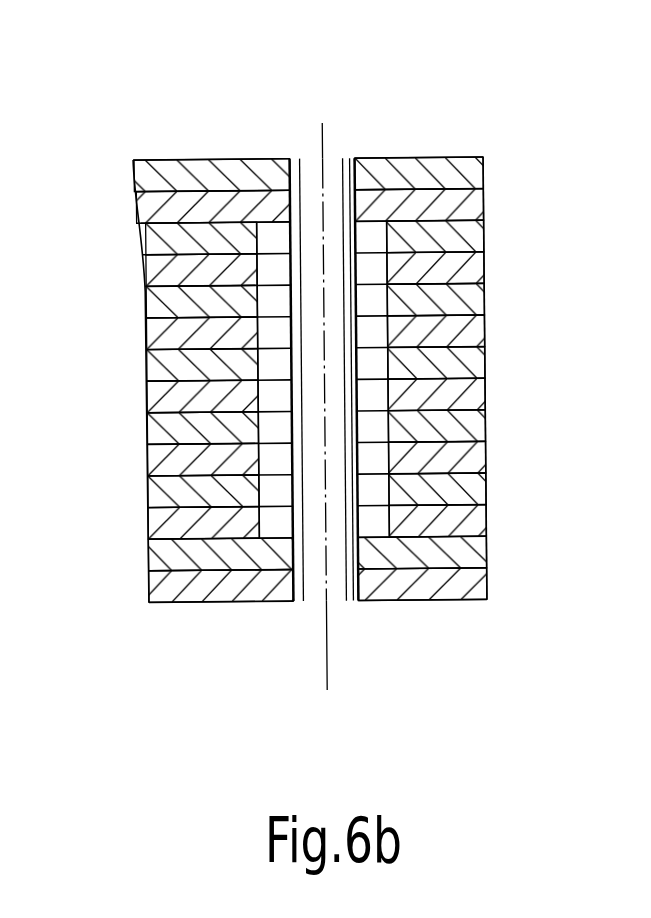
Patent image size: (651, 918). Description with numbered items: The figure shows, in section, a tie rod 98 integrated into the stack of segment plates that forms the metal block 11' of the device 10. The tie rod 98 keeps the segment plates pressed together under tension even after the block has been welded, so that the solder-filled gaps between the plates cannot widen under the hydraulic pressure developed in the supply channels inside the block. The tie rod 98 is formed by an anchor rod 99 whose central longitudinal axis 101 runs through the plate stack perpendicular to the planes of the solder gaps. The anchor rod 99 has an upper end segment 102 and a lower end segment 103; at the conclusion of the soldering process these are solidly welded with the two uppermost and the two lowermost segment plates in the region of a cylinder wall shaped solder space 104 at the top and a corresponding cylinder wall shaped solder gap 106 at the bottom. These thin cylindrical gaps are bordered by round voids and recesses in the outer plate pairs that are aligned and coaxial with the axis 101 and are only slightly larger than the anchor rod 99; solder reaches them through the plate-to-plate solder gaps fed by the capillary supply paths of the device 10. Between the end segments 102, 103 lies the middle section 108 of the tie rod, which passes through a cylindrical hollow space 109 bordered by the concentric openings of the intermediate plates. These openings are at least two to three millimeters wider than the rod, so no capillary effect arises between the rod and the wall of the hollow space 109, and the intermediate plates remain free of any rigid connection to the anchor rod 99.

The device 10 is at (161, 144).
The metal block 11' is at (523, 105).
The tie rod 98 is at (336, 150).
The anchor rod 99 is at (344, 338).
The central longitudinal axis 101 is at (328, 662).
The end segment 102 is at (310, 176).
The end segment 103 is at (340, 603).
The cylinder wall shaped solder space 104 is at (355, 158).
The cylinder wall shaped solder gap 106 is at (358, 603).
The middle section 108 is at (337, 394).
The cylindrical hollow space 109 is at (367, 363).